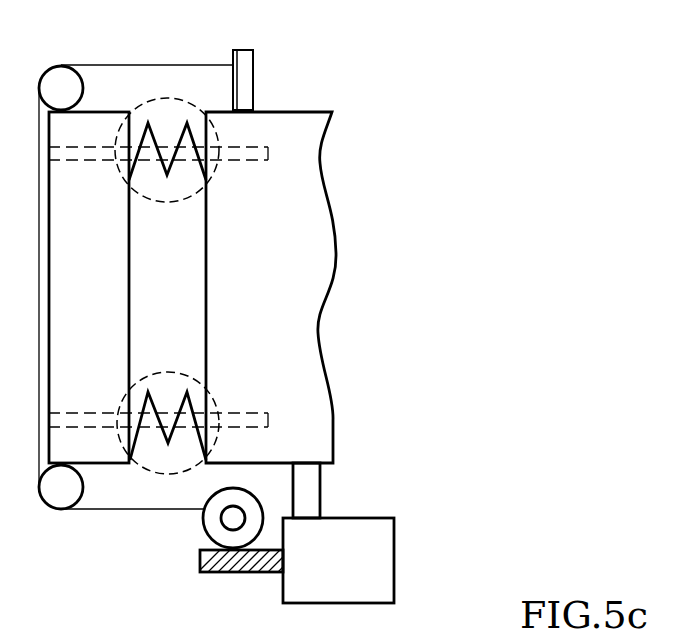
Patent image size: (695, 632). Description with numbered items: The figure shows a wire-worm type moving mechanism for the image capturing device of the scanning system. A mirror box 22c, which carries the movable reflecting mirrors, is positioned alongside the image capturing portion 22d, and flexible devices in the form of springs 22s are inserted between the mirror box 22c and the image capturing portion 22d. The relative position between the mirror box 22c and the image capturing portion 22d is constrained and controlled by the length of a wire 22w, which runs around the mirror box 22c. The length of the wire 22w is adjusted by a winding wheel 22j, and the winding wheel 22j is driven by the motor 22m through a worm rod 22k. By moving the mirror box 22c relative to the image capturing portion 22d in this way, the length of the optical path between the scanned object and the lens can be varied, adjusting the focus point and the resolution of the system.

The mirror box 22c is at (115, 112).
The springs 22s is at (166, 100).
The image capturing portion 22d is at (313, 108).
The wire 22w is at (83, 510).
The winding wheel 22j is at (203, 518).
The worm rod 22k is at (228, 570).
The motor 22m is at (388, 562).